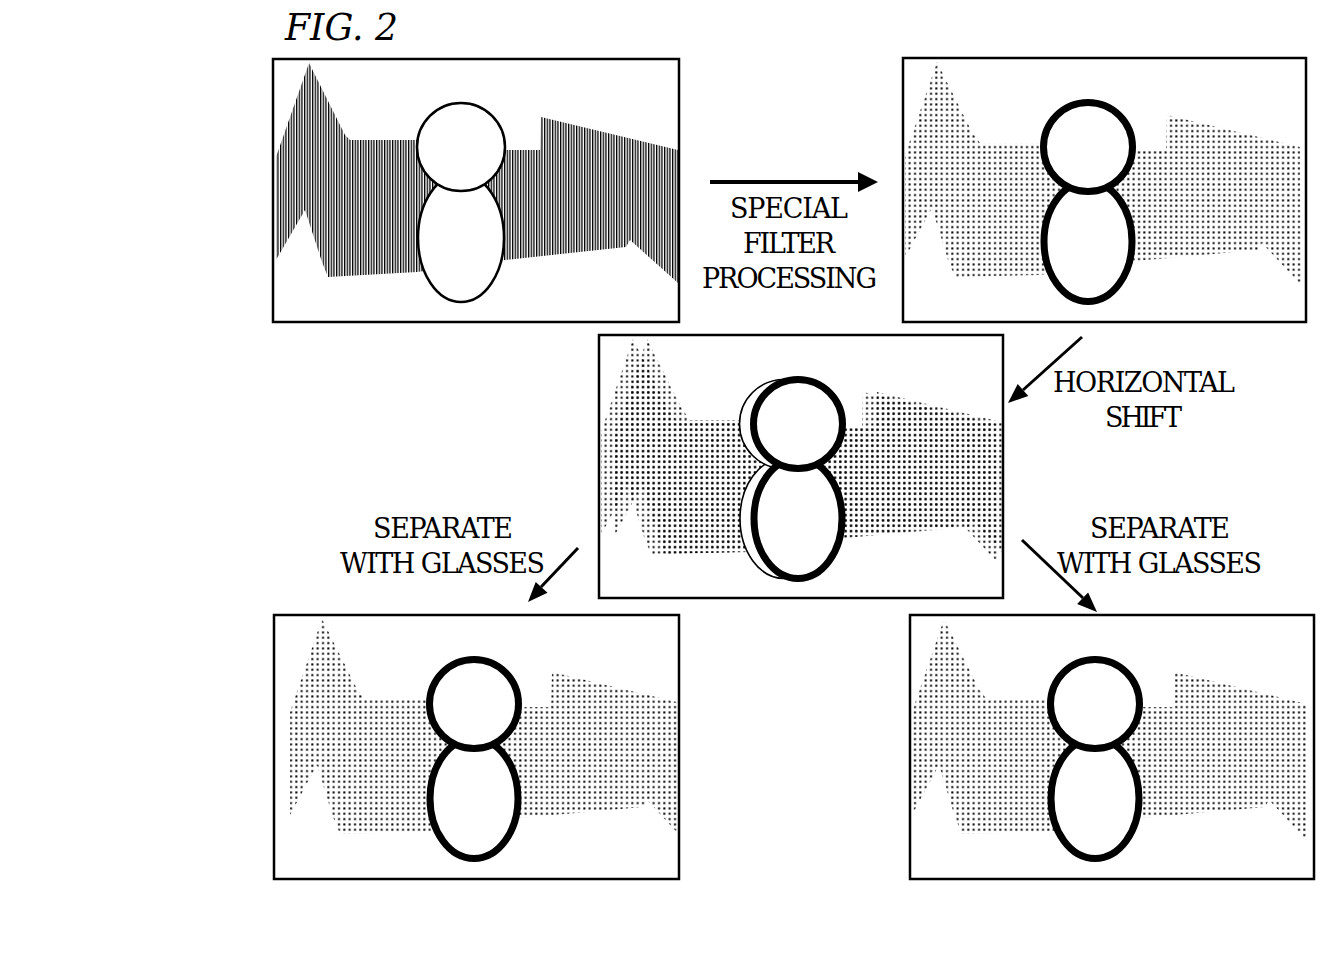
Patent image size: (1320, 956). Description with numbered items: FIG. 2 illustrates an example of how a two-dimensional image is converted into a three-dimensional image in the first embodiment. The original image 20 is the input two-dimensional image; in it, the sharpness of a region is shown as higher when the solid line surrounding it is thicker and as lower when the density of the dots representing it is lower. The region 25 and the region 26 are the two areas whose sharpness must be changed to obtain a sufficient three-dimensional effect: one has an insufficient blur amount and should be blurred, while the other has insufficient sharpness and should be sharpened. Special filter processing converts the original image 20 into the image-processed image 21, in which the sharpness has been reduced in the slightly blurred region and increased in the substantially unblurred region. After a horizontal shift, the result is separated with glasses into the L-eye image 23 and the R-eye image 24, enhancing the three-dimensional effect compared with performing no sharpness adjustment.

The original image 20 is at (522, 187).
The region 25 is at (505, 127).
The region 26 is at (662, 173).
The image-processed image 21 is at (903, 128).
The L-eye image 23 is at (680, 826).
The R-eye image 24 is at (910, 769).